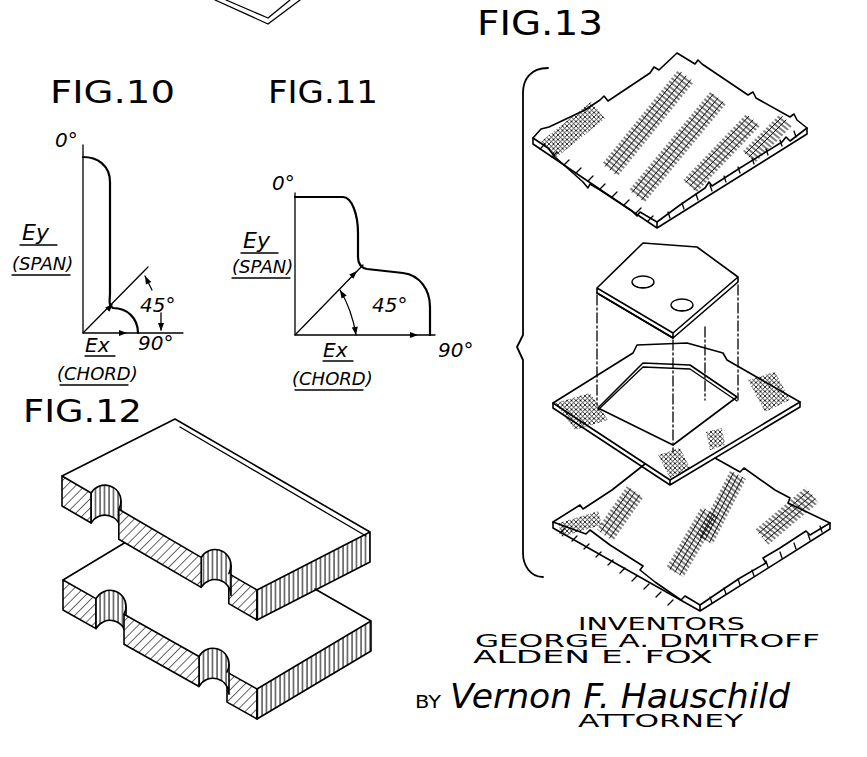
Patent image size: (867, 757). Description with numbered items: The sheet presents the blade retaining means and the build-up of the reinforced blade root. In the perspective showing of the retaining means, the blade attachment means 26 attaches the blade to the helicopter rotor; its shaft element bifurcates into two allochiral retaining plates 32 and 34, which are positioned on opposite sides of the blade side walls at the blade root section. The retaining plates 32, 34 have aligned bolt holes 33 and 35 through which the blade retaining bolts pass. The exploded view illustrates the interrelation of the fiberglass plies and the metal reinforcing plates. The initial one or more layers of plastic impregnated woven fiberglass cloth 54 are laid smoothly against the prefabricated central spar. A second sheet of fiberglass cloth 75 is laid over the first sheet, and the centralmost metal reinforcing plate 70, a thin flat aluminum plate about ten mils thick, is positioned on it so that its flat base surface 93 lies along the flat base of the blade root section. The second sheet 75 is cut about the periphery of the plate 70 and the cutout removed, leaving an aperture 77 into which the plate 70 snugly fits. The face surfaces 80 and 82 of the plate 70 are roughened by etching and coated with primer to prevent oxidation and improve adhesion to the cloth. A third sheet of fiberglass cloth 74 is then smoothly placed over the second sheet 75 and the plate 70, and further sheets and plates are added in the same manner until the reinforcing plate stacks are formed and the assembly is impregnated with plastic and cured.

In FIG. 12, the blade attachment means 26 is at (227, 570).
In FIG. 12, the retaining plate 32 is at (255, 490).
In FIG. 12, the bolt hole 33 is at (90, 520).
In FIG. 12, the retaining plate 34 is at (345, 620).
In FIG. 12, the bolt hole 35 is at (150, 653).
In FIG. 13, the fiberglass cloth sheet 74 is at (712, 90).
In FIG. 13, the reinforcing plate 70 is at (685, 279).
In FIG. 13, the face surface 80 is at (710, 267).
In FIG. 13, the face surface 82 is at (738, 283).
In FIG. 13, the flat base surface 93 is at (613, 305).
In FIG. 13, the second sheet of fiberglass cloth 75 is at (688, 410).
In FIG. 13, the aperture 77 is at (645, 411).
In FIG. 13, the fiberglass cloth layer 54 is at (752, 492).